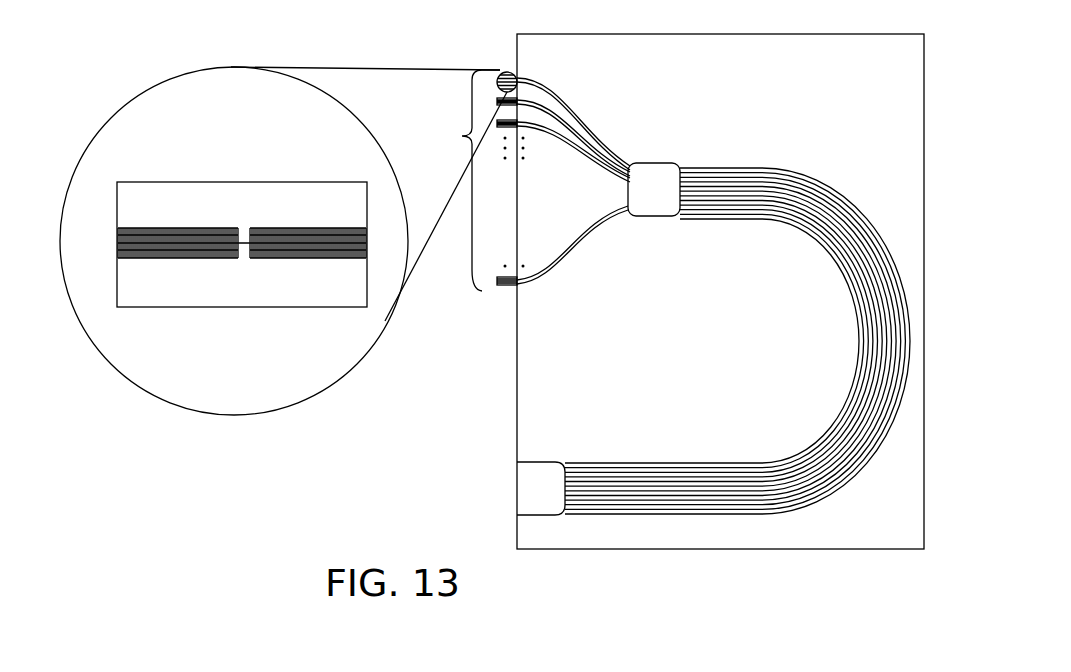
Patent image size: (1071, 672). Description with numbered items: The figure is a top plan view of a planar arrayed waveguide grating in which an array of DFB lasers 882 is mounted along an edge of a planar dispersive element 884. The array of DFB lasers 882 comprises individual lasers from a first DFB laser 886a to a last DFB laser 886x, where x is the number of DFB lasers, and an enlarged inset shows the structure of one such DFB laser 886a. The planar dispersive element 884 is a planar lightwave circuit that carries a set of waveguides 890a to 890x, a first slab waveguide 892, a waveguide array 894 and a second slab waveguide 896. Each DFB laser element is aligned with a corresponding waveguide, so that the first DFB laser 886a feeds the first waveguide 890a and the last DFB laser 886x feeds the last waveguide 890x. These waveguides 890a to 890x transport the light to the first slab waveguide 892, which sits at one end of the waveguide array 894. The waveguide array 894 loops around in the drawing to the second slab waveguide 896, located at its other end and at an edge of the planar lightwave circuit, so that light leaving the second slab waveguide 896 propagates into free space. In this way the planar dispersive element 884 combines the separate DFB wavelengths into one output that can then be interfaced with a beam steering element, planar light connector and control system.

The array of DFB lasers 882 is at (476, 180).
The planar dispersive element 884 is at (925, 448).
The DFB laser 886a is at (506, 70).
The DFB laser 886x is at (505, 292).
The waveguide 890a is at (598, 135).
The waveguide 890x is at (543, 281).
The first slab waveguide 892 is at (645, 217).
The waveguide array 894 is at (842, 202).
The second slab waveguide 896 is at (535, 460).